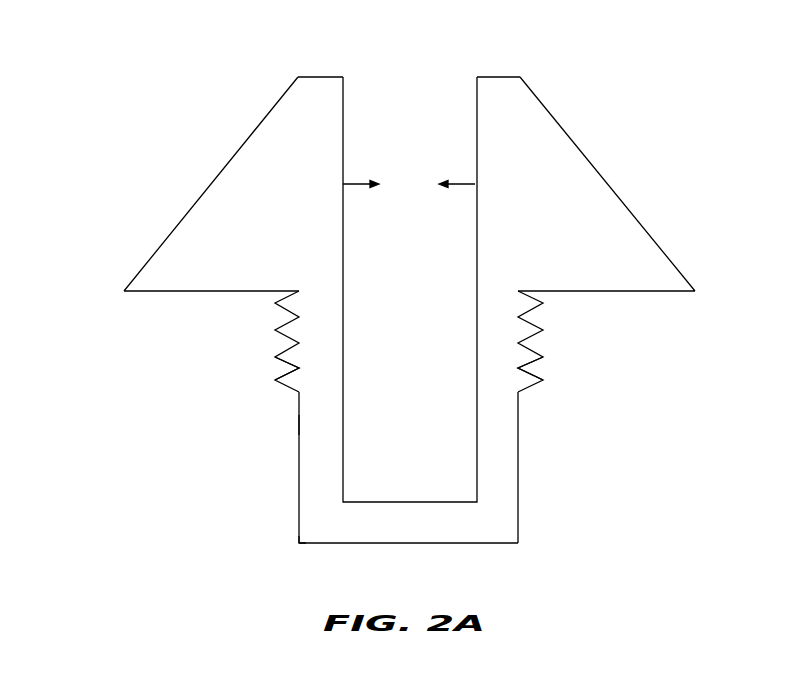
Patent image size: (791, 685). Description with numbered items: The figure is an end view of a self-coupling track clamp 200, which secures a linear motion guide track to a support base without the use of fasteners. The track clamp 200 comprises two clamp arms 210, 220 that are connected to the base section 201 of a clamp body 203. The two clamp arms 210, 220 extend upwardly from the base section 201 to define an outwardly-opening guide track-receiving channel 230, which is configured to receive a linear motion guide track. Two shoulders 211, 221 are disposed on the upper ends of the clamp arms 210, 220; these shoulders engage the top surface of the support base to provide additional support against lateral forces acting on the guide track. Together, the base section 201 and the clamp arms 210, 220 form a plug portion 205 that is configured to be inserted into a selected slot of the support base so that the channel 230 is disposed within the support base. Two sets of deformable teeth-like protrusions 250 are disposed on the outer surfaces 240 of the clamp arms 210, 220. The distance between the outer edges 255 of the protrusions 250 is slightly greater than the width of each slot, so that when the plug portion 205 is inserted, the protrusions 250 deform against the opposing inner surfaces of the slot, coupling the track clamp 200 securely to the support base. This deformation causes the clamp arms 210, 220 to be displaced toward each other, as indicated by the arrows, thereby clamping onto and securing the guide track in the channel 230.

The self-coupling track clamp 200 is at (132, 45).
The clamp arm 210 is at (320, 76).
The clamp arm 220 is at (495, 76).
The shoulder 211 is at (231, 267).
The shoulder 221 is at (559, 267).
The guide track-receiving channel 230 is at (385, 483).
The deformable teeth-like protrusions 250 is at (217, 298).
The outer edge 255 is at (275, 357).
The clamp body 203 is at (281, 426).
The outer surface 240 is at (299, 483).
The base section 201 is at (385, 536).
The plug portion 205 is at (301, 556).